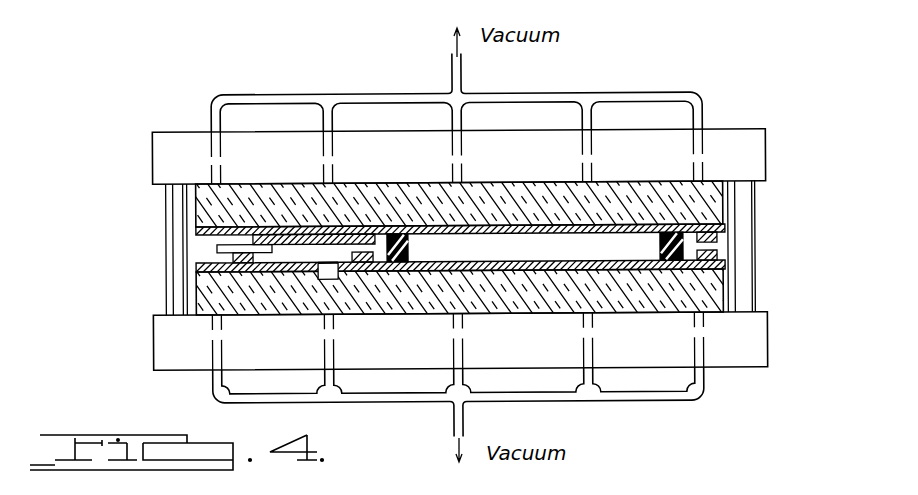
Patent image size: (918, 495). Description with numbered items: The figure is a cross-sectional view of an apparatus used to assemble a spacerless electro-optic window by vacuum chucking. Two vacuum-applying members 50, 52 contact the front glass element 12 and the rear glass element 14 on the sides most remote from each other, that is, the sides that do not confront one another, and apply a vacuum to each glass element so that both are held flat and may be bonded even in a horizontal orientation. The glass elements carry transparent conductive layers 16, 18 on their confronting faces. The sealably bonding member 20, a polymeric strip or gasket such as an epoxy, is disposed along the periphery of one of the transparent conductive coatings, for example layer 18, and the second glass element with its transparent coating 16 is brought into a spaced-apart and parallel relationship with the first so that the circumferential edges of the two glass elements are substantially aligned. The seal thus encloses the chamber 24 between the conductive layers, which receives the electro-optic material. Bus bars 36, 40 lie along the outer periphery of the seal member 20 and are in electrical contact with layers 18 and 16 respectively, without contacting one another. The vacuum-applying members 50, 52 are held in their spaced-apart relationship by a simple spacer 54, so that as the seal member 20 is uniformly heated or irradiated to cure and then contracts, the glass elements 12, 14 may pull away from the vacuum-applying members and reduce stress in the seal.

The front glass element 12 is at (705, 198).
The rear glass element 14 is at (717, 307).
The transparent conductive layer 16 is at (723, 229).
The transparent conductive layer 18 is at (723, 266).
The sealably bonding member 20 is at (400, 262).
The chamber 24 is at (543, 259).
The bus bar 36 is at (720, 257).
The bus bar 40 is at (718, 239).
The vacuum-applying member 50 is at (160, 337).
The vacuum-applying member 52 is at (163, 142).
The spacer 54 is at (173, 233).